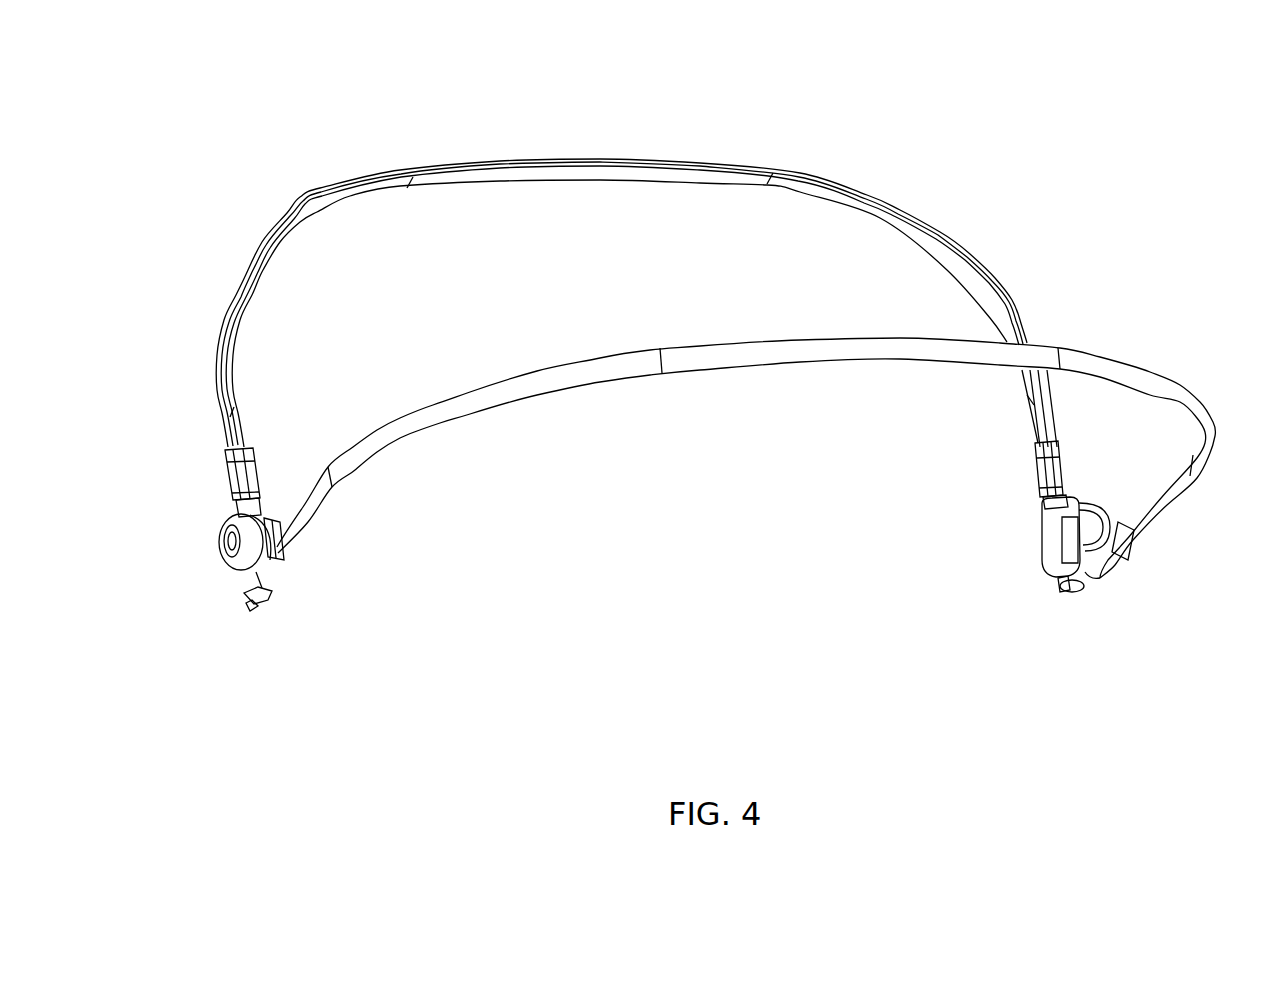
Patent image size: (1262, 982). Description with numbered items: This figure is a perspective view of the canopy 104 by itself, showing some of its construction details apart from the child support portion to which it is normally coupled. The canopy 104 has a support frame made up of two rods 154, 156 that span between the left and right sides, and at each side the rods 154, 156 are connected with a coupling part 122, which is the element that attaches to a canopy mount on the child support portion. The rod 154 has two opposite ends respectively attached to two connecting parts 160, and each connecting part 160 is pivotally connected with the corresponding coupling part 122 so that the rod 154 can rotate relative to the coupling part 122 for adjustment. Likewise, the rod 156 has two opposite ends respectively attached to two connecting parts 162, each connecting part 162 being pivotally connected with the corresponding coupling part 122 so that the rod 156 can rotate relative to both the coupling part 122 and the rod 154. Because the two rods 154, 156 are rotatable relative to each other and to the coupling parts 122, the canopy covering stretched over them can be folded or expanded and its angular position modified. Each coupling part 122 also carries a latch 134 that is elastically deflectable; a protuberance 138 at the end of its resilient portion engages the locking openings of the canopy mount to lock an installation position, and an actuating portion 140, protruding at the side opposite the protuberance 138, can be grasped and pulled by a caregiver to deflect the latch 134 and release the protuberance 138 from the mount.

The canopy 104 is at (1022, 128).
The rod 154 is at (621, 160).
The rod 156 is at (633, 375).
The connecting part 160 is at (230, 505).
The coupling part 122 is at (287, 555).
The connecting part 162 is at (240, 568).
The protuberance 138 is at (273, 597).
The actuating portion 140 is at (248, 608).
The latch 134 is at (284, 613).